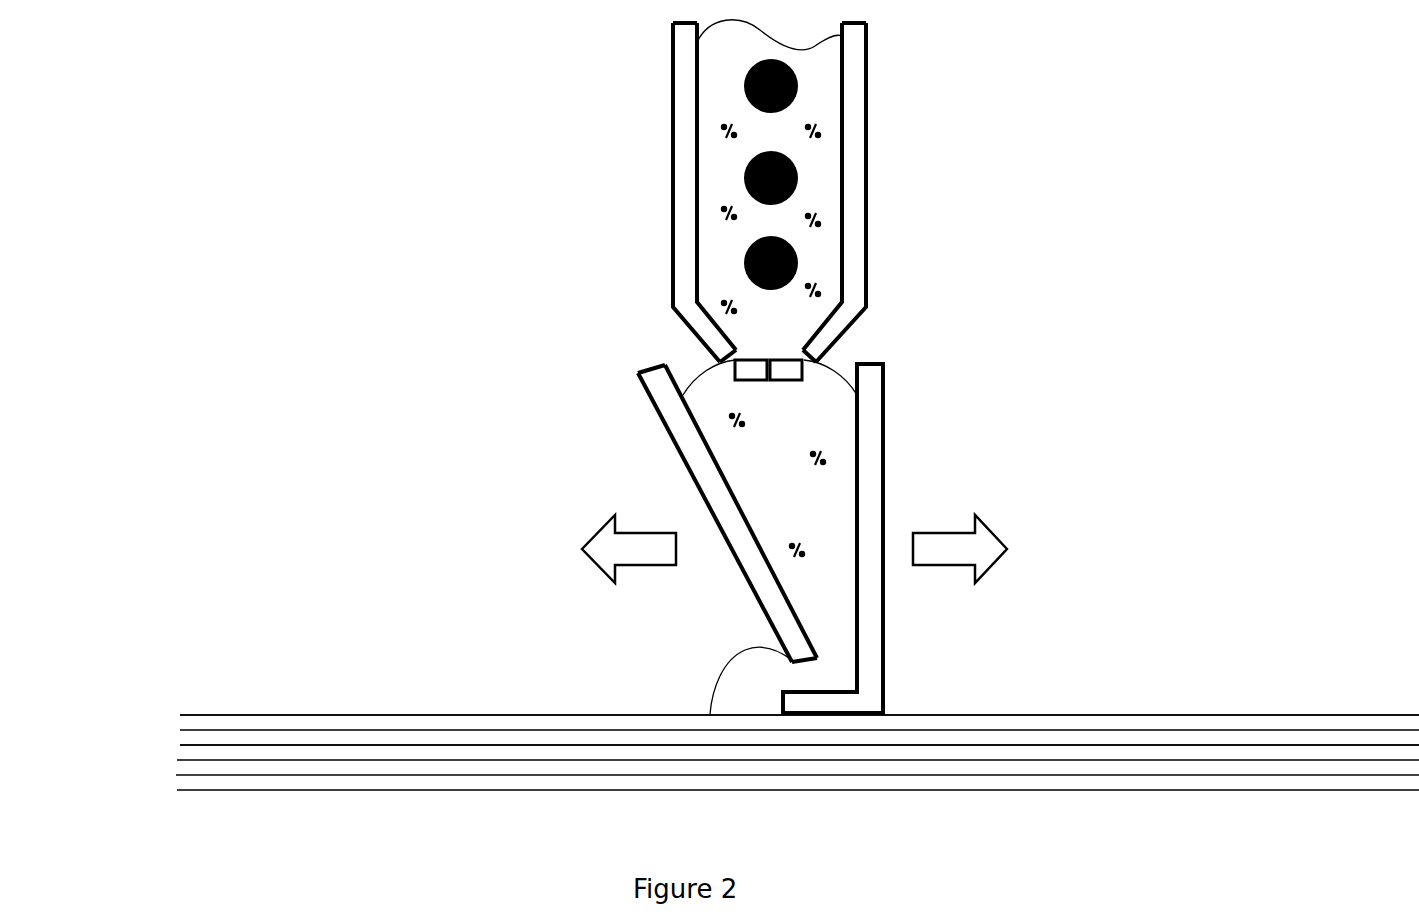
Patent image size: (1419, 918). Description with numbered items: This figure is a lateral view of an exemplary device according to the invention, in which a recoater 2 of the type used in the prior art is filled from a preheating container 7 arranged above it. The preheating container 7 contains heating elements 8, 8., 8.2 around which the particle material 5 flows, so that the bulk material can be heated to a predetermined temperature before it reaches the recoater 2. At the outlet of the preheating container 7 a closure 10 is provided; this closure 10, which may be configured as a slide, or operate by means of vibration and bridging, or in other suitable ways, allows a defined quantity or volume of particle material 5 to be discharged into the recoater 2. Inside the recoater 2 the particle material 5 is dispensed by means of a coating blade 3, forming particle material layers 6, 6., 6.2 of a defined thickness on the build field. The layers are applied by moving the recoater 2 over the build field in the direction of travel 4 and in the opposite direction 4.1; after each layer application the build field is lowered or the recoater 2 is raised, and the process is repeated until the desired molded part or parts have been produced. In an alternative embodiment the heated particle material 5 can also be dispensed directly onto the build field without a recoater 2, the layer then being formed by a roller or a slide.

The recoater 2 is at (801, 537).
The coating blade 3 is at (820, 703).
The direction of travel 4 is at (587, 549).
The opposite direction of travel 4.1 is at (1014, 549).
The particle material 5 is at (818, 110).
The particle material layers 6 is at (166, 704).
The particle material layer on the build field 6. is at (342, 722).
The particle material layer on the build field 6.2 is at (428, 740).
The preheating container 7 is at (864, 191).
The heating element 8 is at (722, 91).
The additional heating element 8. is at (724, 190).
The additional heating element 8.2 is at (724, 272).
The closure 10 is at (788, 369).